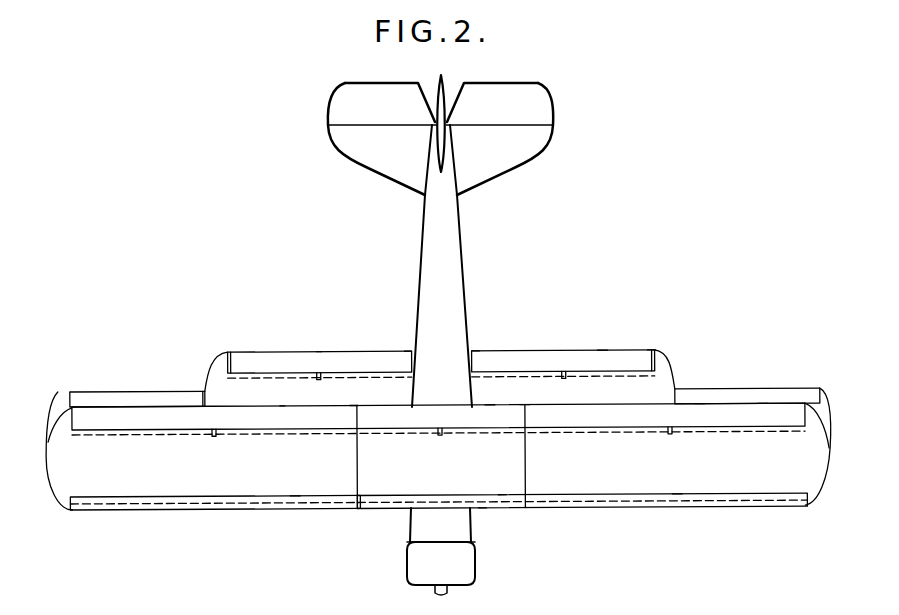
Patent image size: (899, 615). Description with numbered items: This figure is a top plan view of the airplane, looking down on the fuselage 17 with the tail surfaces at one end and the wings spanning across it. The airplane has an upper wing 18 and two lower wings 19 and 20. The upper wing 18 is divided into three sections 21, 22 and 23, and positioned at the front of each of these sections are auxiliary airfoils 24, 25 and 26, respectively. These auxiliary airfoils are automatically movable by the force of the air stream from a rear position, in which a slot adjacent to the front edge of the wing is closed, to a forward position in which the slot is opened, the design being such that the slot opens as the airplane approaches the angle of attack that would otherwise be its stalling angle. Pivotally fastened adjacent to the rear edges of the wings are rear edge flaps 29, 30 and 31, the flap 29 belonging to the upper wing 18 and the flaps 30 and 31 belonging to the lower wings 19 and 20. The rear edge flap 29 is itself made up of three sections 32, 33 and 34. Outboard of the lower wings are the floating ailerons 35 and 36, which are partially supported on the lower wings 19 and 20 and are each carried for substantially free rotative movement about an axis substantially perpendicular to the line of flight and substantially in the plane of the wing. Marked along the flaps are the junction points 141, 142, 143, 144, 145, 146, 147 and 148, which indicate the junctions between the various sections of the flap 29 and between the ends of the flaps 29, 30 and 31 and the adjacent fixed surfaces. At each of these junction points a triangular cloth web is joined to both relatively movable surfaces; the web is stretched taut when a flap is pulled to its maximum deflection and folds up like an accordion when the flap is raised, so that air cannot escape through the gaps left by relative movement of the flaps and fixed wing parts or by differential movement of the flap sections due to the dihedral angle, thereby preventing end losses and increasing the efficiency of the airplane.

The fuselage 17 is at (468, 262).
The upper wing 18 is at (617, 480).
The lower wing 19 is at (655, 385).
The lower wing 20 is at (247, 388).
The section 21 is at (678, 480).
The section 22 is at (500, 483).
The section 23 is at (297, 487).
The auxiliary airfoil 24 is at (745, 507).
The auxiliary airfoil 25 is at (482, 508).
The auxiliary airfoil 26 is at (225, 510).
The rear edge flap 29 is at (700, 410).
The rear edge flap 30 is at (603, 350).
The rear edge flap 31 is at (320, 350).
The section 32 is at (763, 407).
The section 33 is at (490, 408).
The section 34 is at (279, 405).
The floating aileron 35 is at (112, 390).
The floating aileron 36 is at (747, 385).
The junction point 141 is at (228, 350).
The junction point 142 is at (408, 350).
The junction point 143 is at (473, 347).
The junction point 144 is at (652, 350).
The junction point 145 is at (68, 390).
The junction point 146 is at (353, 405).
The junction point 147 is at (527, 407).
The junction point 148 is at (827, 367).